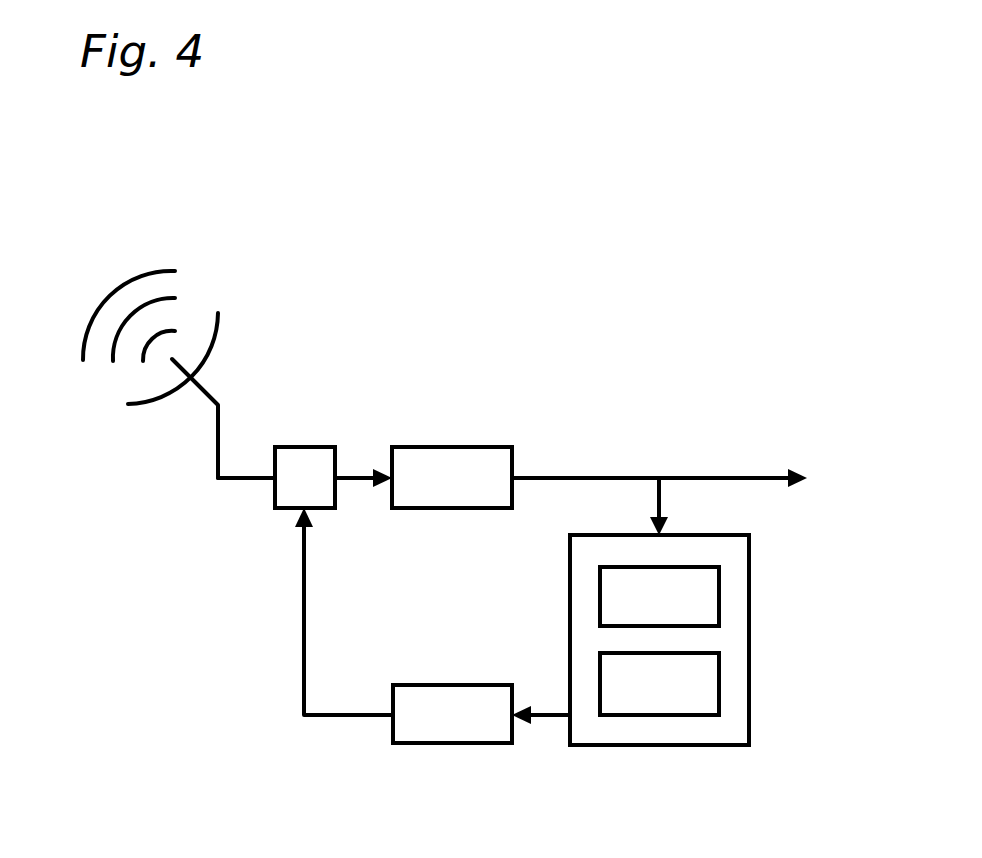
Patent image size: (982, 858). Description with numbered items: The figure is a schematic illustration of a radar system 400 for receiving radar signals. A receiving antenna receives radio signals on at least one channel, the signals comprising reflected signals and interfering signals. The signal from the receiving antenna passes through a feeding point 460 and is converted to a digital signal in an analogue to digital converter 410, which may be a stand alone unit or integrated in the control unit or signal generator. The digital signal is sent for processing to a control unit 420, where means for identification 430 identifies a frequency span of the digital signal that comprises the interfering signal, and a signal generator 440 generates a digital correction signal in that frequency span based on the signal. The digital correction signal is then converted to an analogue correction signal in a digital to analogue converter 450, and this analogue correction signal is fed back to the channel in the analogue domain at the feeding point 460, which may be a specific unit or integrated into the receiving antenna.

The radar system 400 is at (122, 205).
The analogue to digital converter 410 is at (482, 447).
The control unit 420 is at (701, 690).
The means for identification 430 is at (719, 595).
The signal generator 440 is at (719, 685).
The digital to analogue converter 450 is at (423, 743).
The feeding point 460 is at (304, 447).